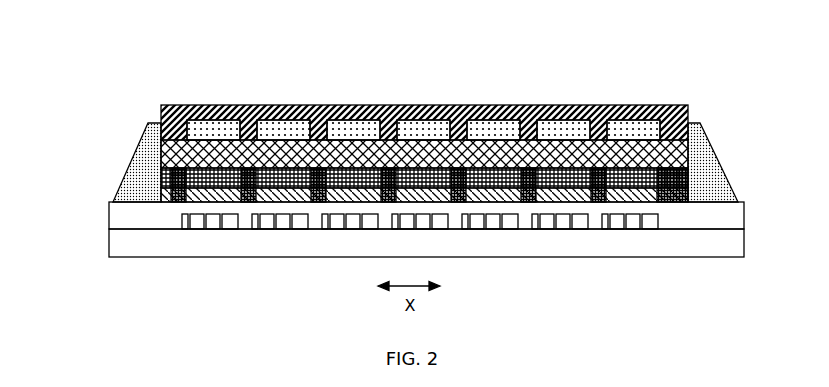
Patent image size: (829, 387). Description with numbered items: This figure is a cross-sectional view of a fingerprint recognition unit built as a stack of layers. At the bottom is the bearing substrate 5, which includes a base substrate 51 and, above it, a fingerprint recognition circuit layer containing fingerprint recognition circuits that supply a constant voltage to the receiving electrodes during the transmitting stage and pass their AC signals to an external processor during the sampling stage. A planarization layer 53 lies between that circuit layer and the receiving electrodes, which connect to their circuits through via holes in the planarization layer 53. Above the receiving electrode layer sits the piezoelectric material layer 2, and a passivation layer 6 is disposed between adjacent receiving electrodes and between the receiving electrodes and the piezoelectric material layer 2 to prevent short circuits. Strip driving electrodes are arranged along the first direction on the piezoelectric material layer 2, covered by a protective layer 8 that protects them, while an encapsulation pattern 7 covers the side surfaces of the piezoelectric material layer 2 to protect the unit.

The piezoelectric material layer 2 is at (179, 155).
The bearing substrate 5 is at (414, 239).
The protective layer 8 is at (690, 114).
The encapsulation pattern 7 is at (712, 156).
The passivation layer 6 is at (701, 180).
The planarization layer 53 is at (722, 214).
The base substrate 51 is at (722, 246).